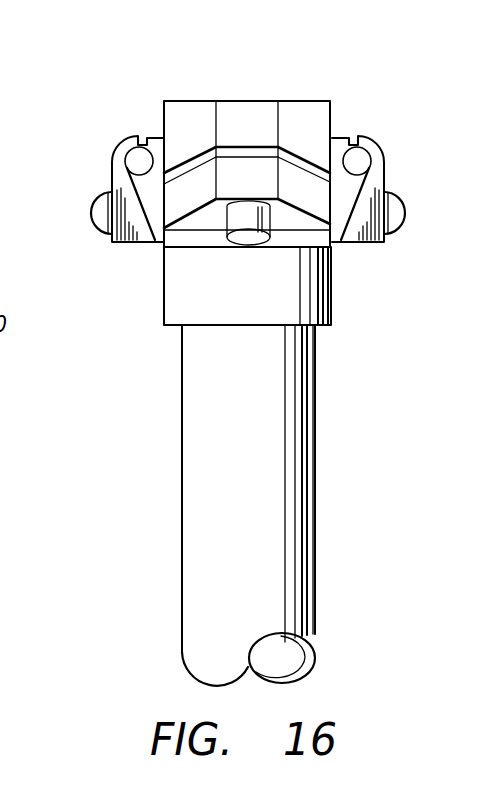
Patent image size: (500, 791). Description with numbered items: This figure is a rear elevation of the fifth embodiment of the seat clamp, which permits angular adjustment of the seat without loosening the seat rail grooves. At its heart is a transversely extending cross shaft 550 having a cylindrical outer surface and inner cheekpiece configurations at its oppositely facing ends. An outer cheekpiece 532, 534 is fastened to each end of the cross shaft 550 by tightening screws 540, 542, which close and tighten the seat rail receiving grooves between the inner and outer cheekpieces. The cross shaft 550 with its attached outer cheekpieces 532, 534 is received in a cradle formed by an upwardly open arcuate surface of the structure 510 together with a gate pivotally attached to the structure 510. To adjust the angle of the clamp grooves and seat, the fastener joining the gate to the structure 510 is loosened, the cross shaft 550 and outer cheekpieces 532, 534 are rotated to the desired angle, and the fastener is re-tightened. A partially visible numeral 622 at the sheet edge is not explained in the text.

The structure 510 is at (333, 308).
The cross shaft 550 is at (338, 136).
The outer cheekpiece 532 is at (140, 247).
The outer cheekpiece 534 is at (365, 247).
The screw 540 is at (86, 206).
The screw 542 is at (403, 193).
The reference element (partially shown) 622 is at (16, 114).